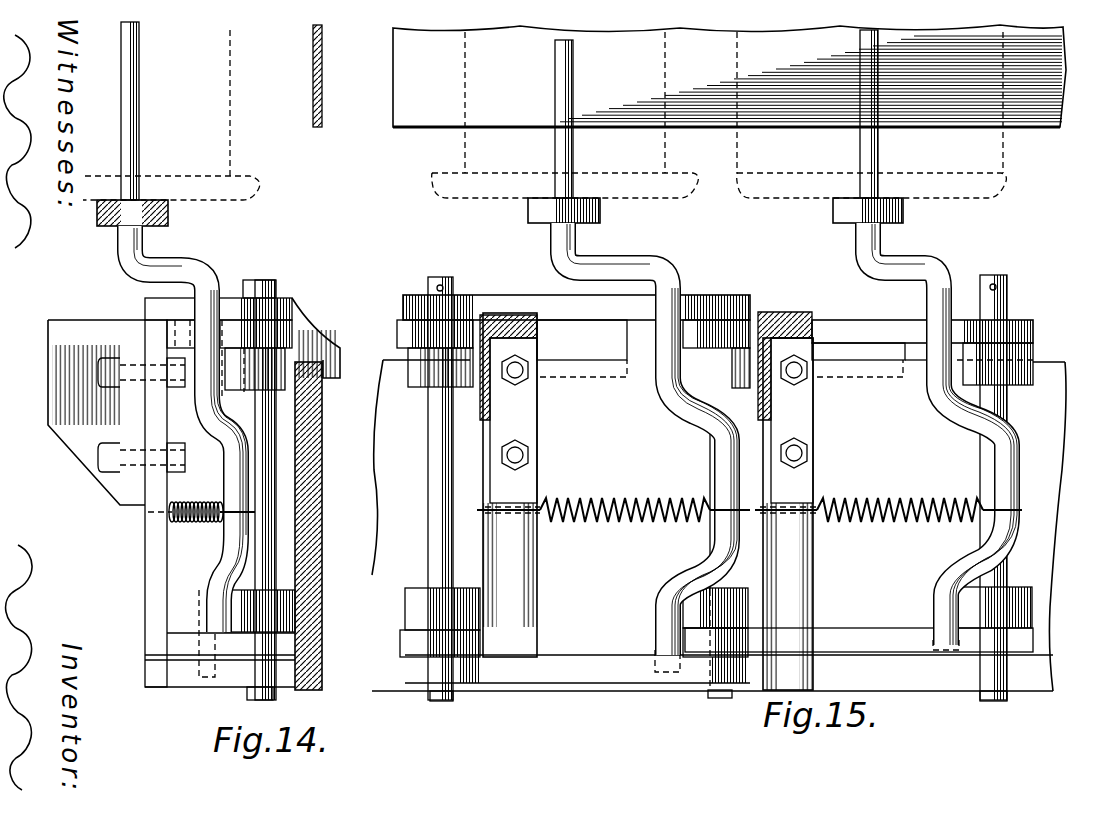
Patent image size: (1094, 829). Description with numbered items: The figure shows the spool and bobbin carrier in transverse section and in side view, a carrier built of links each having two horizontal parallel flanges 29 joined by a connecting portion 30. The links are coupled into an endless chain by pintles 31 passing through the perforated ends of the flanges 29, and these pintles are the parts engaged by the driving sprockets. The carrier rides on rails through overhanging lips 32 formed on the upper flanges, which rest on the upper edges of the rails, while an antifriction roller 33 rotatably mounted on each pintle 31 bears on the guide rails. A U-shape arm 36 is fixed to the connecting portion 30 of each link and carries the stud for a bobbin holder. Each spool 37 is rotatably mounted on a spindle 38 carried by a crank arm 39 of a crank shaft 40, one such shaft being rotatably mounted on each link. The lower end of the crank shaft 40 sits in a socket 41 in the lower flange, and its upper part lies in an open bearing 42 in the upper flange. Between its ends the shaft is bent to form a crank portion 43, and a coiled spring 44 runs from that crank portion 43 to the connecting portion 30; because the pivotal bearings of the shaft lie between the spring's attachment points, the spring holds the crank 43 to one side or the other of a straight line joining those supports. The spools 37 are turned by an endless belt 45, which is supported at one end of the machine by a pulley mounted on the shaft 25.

In FIG. 14, the shaft 25 is at (318, 560).
In FIG. 14, the horizontal parallel flanges 29 is at (226, 300).
In FIG. 15, the horizontal parallel flanges 29 is at (470, 298).
In FIG. 14, the connecting portion 30 is at (152, 560).
In FIG. 15, the connecting portion 30 is at (538, 580).
In FIG. 14, the pintles 31 is at (268, 466).
In FIG. 15, the pintles 31 is at (435, 433).
In FIG. 14, the overhanging lips 32 is at (340, 362).
In FIG. 15, the overhanging lips 32 is at (610, 344).
In FIG. 14, the antifriction roller 33 is at (288, 612).
In FIG. 15, the antifriction roller 33 is at (420, 600).
In FIG. 14, the U-shape arm 36 is at (60, 350).
In FIG. 15, the U-shape arm 36 is at (480, 385).
In FIG. 14, the spools 37 is at (258, 190).
In FIG. 15, the spools 37 is at (440, 175).
In FIG. 14, the spindle 38 is at (137, 109).
In FIG. 15, the spindle 38 is at (560, 135).
In FIG. 14, the crank arm 39 is at (183, 263).
In FIG. 15, the crank arm 39 is at (647, 260).
In FIG. 15, the crank shaft 40 is at (657, 352).
In FIG. 14, the socket 41 is at (210, 680).
In FIG. 15, the socket 41 is at (667, 674).
In FIG. 14, the open bearing 42 is at (190, 332).
In FIG. 15, the open bearing 42 is at (940, 330).
In FIG. 14, the crank portion 43 is at (228, 468).
In FIG. 15, the crank portion 43 is at (730, 470).
In FIG. 14, the coiled spring 44 is at (203, 524).
In FIG. 15, the coiled spring 44 is at (598, 488).
In FIG. 14, the endless belt 45 is at (322, 83).
In FIG. 15, the endless belt 45 is at (407, 93).